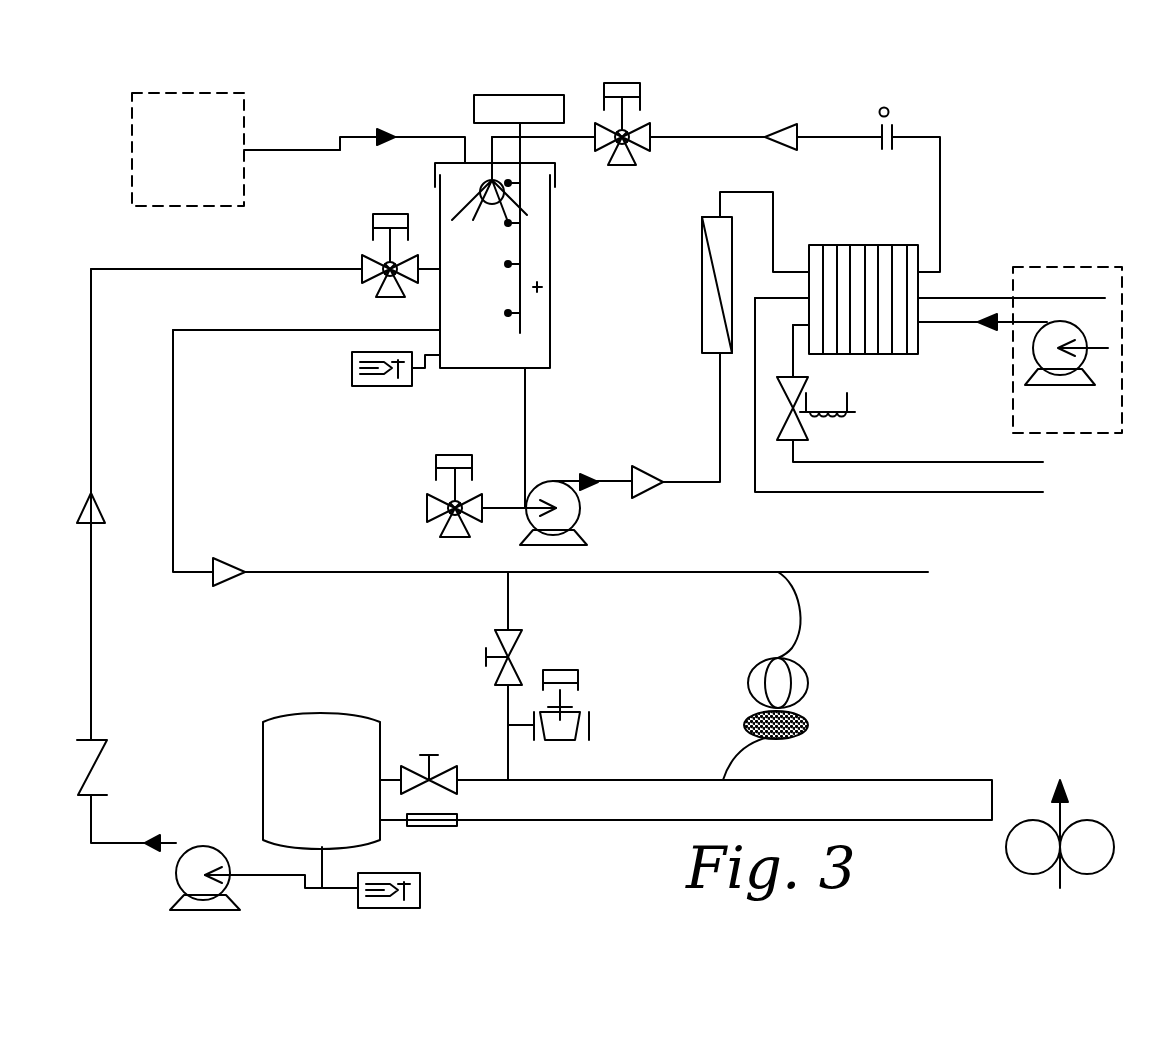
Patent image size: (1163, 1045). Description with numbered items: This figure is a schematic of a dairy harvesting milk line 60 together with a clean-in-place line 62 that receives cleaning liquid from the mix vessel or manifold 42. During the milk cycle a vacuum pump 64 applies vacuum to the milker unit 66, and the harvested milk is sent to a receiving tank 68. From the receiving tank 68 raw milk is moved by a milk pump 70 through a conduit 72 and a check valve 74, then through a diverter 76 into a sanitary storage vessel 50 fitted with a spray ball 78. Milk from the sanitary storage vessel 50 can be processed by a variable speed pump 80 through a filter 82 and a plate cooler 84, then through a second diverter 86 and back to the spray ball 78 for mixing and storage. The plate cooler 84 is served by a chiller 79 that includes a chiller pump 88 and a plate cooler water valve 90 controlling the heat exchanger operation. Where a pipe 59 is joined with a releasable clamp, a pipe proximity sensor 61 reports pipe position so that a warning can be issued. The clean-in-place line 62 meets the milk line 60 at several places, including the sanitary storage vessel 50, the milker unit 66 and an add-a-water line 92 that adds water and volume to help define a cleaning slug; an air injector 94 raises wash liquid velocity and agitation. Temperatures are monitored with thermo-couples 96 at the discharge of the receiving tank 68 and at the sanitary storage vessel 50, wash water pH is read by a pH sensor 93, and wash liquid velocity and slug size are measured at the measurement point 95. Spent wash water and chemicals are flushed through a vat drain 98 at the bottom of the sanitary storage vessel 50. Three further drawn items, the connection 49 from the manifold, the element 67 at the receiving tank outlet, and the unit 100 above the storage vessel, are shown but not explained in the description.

The mix vessel or manifold 42 is at (228, 93).
The supply line 49 is at (316, 150).
The sanitary storage vessel 50 is at (533, 340).
The pipe 59 is at (900, 122).
The milk line 60 is at (905, 780).
The pipe proximity sensor 61 is at (888, 107).
The clean-in-place line 62 is at (898, 572).
The vacuum pump 64 is at (1070, 825).
The milker unit 66 is at (808, 684).
The valve 67 is at (445, 765).
The receiving tank 68 is at (348, 722).
The milk pump 70 is at (205, 858).
The conduit 72 is at (91, 655).
The check valve 74 is at (105, 752).
The diverter 76 is at (362, 260).
The spray ball 78 is at (500, 197).
The chiller 79 is at (686, 350).
The variable speed pump 80 is at (570, 510).
The filter 82 is at (700, 290).
The plate cooler 84 is at (855, 256).
The second diverter 86 is at (650, 130).
The chiller pump 88 is at (1045, 350).
The plate cooler water valve 90 is at (808, 430).
The add-a-water line 92 is at (512, 645).
The pH sensor 93 is at (542, 287).
The air injector 94 is at (575, 720).
The wash liquid velocity and slug size measurement point 95 is at (440, 826).
The thermo-couples 96 is at (368, 386).
The vat drain 98 is at (427, 500).
The controller 100 is at (530, 103).